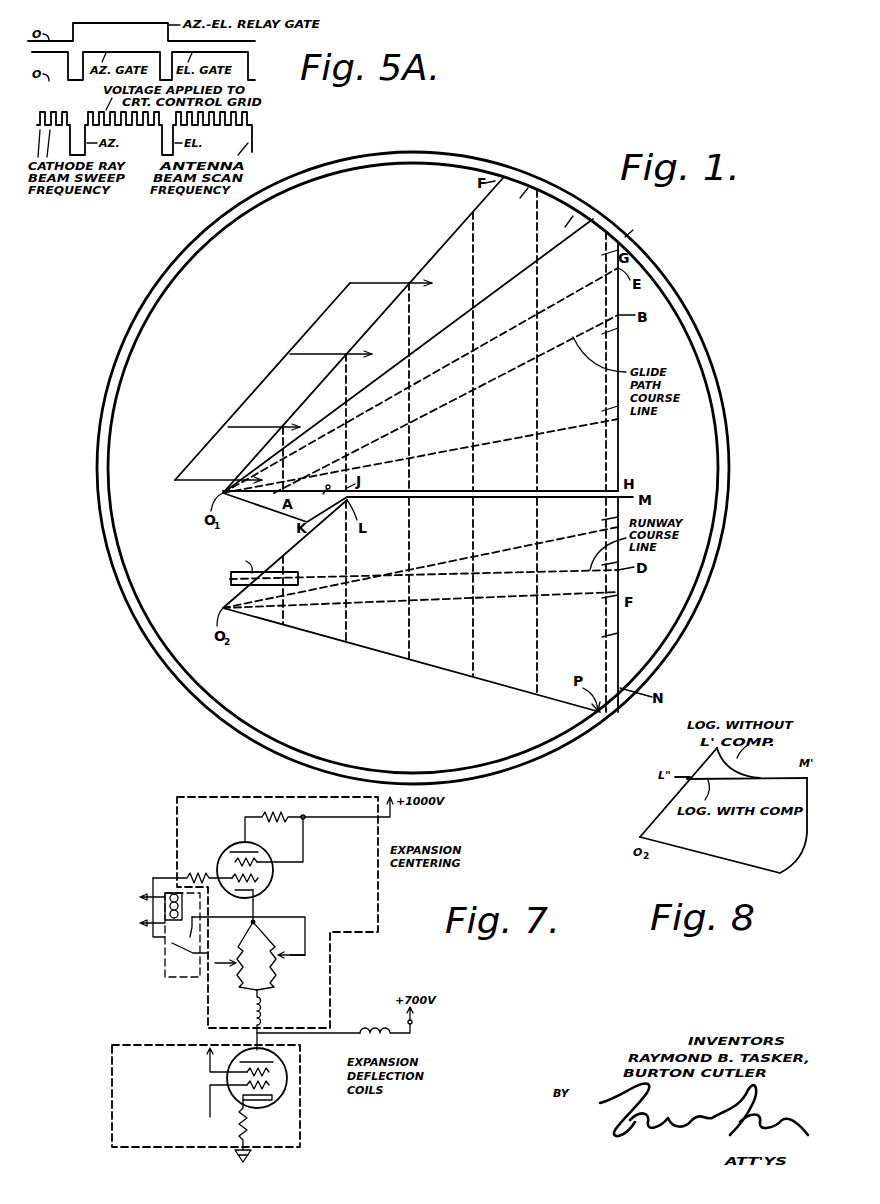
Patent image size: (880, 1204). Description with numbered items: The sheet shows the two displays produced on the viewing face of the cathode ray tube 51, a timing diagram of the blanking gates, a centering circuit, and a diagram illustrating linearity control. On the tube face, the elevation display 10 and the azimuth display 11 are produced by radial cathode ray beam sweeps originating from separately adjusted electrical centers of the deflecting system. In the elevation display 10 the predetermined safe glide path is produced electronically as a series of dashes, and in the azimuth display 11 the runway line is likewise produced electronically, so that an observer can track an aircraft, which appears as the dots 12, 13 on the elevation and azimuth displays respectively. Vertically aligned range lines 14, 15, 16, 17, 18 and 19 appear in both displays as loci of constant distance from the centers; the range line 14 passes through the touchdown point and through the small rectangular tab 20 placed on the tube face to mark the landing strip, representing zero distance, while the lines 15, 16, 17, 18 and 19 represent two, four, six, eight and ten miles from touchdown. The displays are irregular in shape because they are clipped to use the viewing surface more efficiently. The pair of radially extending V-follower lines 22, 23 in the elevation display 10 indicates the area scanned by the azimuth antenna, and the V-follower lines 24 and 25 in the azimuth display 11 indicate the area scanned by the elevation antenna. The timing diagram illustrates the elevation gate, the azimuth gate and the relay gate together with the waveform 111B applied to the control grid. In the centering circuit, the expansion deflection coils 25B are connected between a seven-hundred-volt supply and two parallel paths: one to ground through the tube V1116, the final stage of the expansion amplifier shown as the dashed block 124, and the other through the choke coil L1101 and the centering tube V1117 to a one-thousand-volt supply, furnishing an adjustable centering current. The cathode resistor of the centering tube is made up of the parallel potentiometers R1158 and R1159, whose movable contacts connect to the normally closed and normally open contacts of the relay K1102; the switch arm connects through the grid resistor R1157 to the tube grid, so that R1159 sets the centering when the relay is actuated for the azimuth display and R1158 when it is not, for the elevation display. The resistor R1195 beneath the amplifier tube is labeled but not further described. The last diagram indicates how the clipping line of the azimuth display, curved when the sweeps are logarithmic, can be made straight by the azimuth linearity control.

In FIG. 5A, the pulse train voltage applied to CRT control grid 111B is at (37, 113).
In FIG. 1, the cathode ray tube 51 is at (458, 173).
In FIG. 1, the elevation display 10 is at (417, 250).
In FIG. 1, the azimuth display 11 is at (406, 695).
In FIG. 1, the dot 12 is at (462, 387).
In FIG. 1, the dot 13 is at (464, 587).
In FIG. 1, the range line 14 is at (283, 441).
In FIG. 1, the range line 15 is at (346, 398).
In FIG. 1, the range line 16 is at (409, 330).
In FIG. 1, the range line 17 is at (473, 262).
In FIG. 1, the range line 18 is at (537, 218).
In FIG. 1, the range line 19 is at (606, 267).
In FIG. 1, the small rectangular tab 20 is at (230, 578).
In FIG. 1, the V-follower line 22 is at (504, 292).
In FIG. 1, the V-follower line 23 is at (497, 440).
In FIG. 1, the V-follower line 24 is at (490, 553).
In FIG. 1, the V-follower line 25 is at (510, 602).
In FIG. 7, the centering tube V1117 is at (260, 870).
In FIG. 7, the grid resistor R1157 is at (192, 870).
In FIG. 7, the relay K1102 is at (174, 942).
In FIG. 7, the potentiometer R1158 is at (232, 958).
In FIG. 7, the potentiometer R1159 is at (285, 956).
In FIG. 7, the choke coil L1101 is at (283, 1020).
In FIG. 7, the expansion deflection coils 25B is at (375, 1032).
In FIG. 7, the expansion amplifier 124 is at (112, 1115).
In FIG. 7, the tube V1116 is at (259, 1087).
In FIG. 7, the resistor R1195 is at (263, 1131).